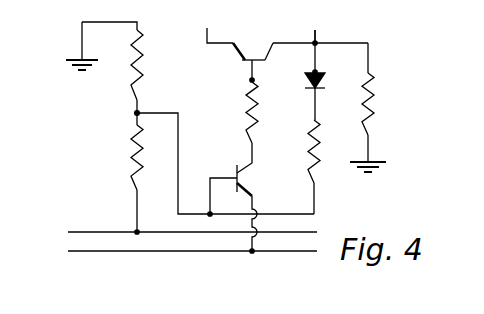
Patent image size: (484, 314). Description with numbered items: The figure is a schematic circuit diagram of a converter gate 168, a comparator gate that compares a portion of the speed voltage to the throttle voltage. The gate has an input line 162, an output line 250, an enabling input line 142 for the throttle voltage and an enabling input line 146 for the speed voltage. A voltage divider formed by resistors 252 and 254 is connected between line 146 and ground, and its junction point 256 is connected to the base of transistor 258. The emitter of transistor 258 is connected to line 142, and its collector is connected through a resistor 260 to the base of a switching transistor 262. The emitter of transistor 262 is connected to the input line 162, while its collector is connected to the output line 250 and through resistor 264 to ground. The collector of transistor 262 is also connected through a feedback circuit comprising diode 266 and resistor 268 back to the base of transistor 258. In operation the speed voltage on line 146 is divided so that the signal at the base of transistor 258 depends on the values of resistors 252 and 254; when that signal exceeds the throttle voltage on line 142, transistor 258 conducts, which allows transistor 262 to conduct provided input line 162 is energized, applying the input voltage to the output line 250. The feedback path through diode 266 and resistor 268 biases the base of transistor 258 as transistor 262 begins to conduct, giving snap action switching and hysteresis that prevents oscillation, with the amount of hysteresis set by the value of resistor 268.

The enabling input line for the throttle voltage 142 is at (102, 251).
The enabling input line for the speed voltage 146 is at (98, 232).
The input line 162 is at (238, 28).
The converter gate 168 is at (345, 206).
The output line 250 is at (315, 34).
The resistor 252 is at (135, 155).
The resistor 254 is at (140, 52).
The junction point 256 is at (135, 113).
The transistor 258 is at (237, 168).
The resistor 260 is at (249, 95).
The switching transistor 262 is at (249, 66).
The resistor 264 is at (372, 81).
The diode 266 is at (311, 81).
The resistor 268 is at (308, 138).